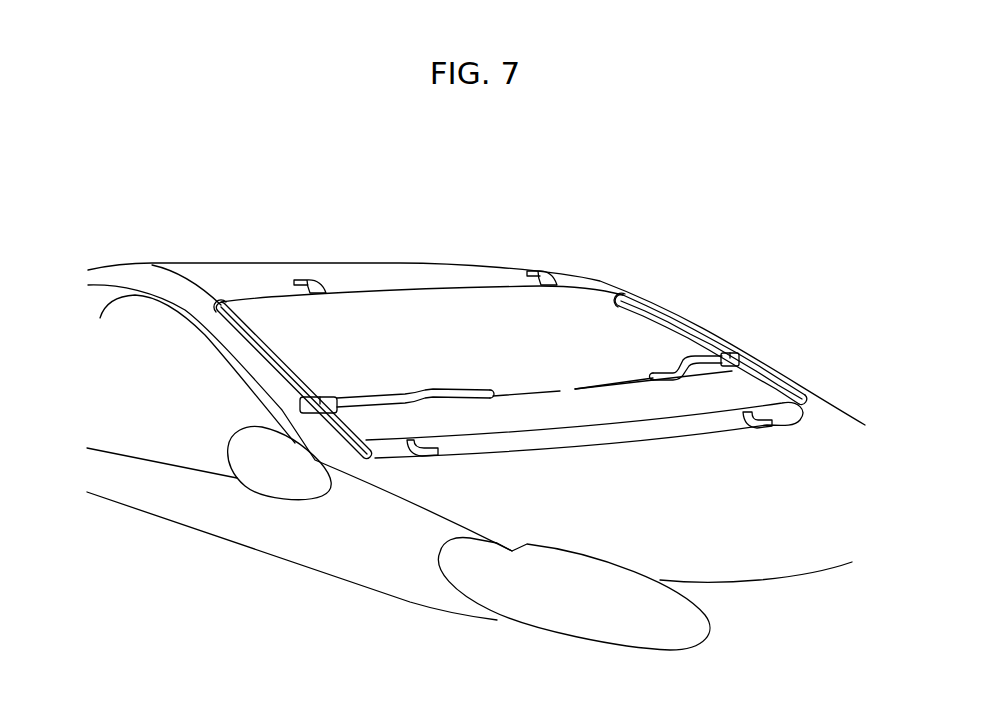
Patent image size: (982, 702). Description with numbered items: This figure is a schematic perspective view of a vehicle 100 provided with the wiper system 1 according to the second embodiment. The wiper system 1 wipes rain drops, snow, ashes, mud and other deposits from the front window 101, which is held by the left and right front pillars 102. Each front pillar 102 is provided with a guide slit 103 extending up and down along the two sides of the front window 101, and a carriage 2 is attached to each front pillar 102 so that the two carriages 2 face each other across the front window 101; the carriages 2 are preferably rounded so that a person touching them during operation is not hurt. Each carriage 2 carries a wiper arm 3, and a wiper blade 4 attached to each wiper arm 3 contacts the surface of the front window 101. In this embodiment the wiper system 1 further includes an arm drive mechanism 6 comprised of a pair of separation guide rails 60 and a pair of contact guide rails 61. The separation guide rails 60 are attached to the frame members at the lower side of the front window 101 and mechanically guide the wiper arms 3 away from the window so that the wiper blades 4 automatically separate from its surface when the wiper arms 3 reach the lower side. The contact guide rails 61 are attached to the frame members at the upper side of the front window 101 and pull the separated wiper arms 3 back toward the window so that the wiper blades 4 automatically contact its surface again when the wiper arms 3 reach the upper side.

The wiper system 1 is at (541, 358).
The carriage 2 is at (318, 400).
The wiper arm 3 is at (410, 392).
The wiper blade 4 is at (560, 390).
The arm drive mechanism 6 is at (542, 405).
The separation guide rail 60 is at (753, 414).
The contact guide rail 61 is at (313, 280).
The vehicle 100 is at (446, 264).
The front window 101 is at (487, 302).
The front pillar 102 is at (254, 350).
The guide slit 103 is at (217, 297).